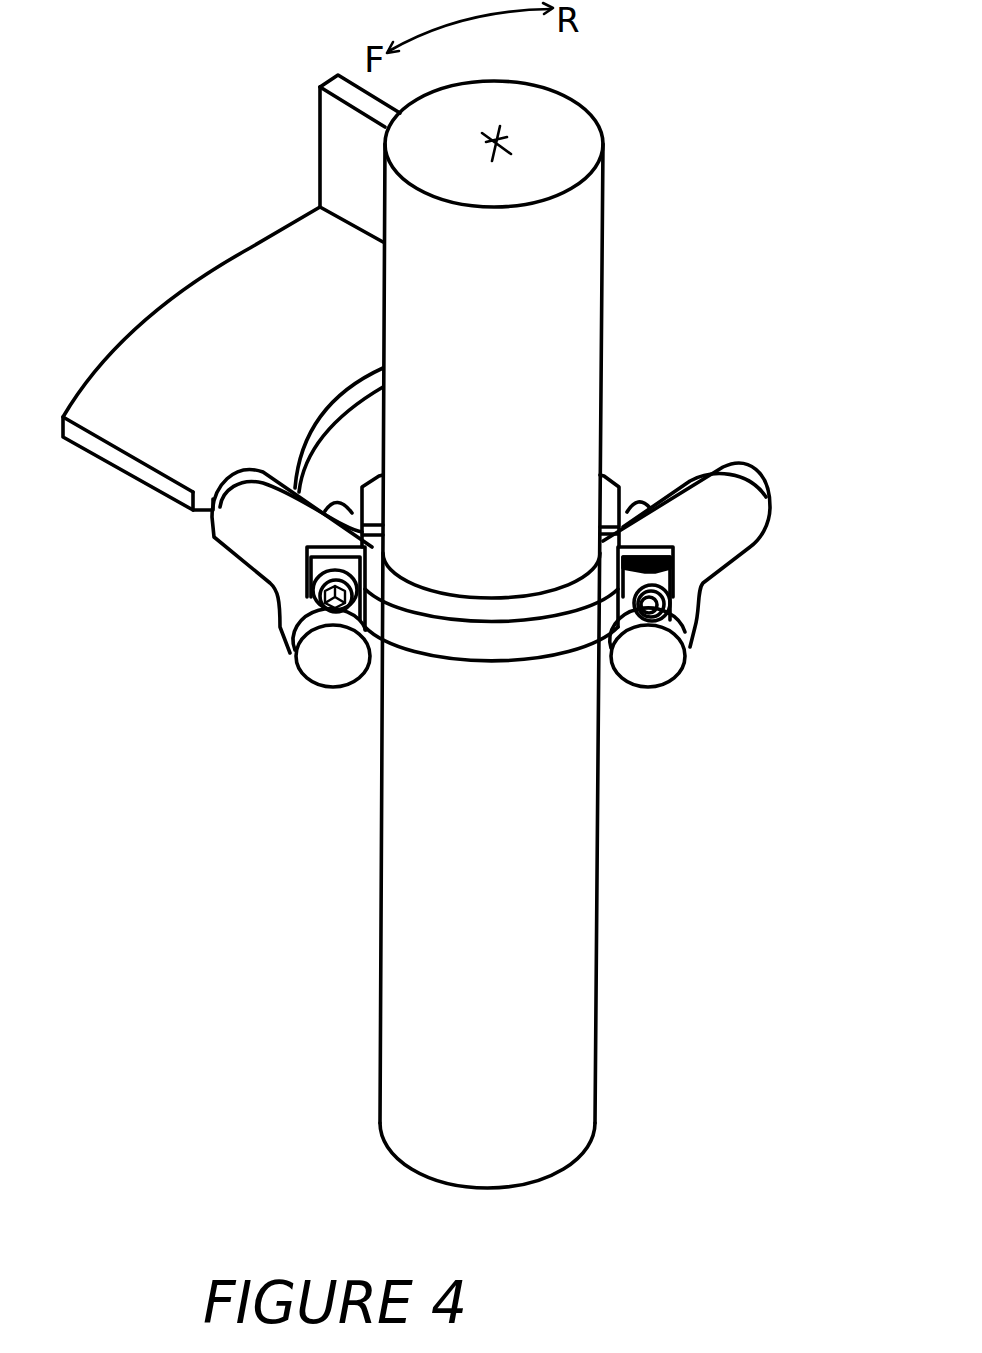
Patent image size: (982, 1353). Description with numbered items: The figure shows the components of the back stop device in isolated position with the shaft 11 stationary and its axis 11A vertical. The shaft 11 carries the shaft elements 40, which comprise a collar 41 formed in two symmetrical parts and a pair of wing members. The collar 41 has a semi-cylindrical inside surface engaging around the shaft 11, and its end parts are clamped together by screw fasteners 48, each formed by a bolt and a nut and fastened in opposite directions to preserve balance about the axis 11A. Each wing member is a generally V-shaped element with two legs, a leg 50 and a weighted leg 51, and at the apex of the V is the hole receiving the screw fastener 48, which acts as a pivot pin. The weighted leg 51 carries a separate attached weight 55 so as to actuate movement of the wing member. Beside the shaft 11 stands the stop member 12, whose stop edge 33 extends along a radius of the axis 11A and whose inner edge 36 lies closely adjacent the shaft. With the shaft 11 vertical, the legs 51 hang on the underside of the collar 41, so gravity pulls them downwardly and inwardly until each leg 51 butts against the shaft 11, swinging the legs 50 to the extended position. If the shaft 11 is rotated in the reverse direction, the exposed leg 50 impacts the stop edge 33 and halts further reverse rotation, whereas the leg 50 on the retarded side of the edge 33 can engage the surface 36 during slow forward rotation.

The shaft 11 is at (568, 297).
The axis of the shaft 11A is at (501, 142).
The stop member 12 is at (133, 422).
The abutment face 33 is at (207, 497).
The inner edge 36 is at (337, 412).
The shaft elements 40 is at (695, 445).
The collar 41 is at (467, 650).
The screw fasteners 48 is at (653, 606).
The leg 50 is at (223, 537).
The weighted leg 51 is at (293, 660).
The attached weight 55 is at (648, 670).